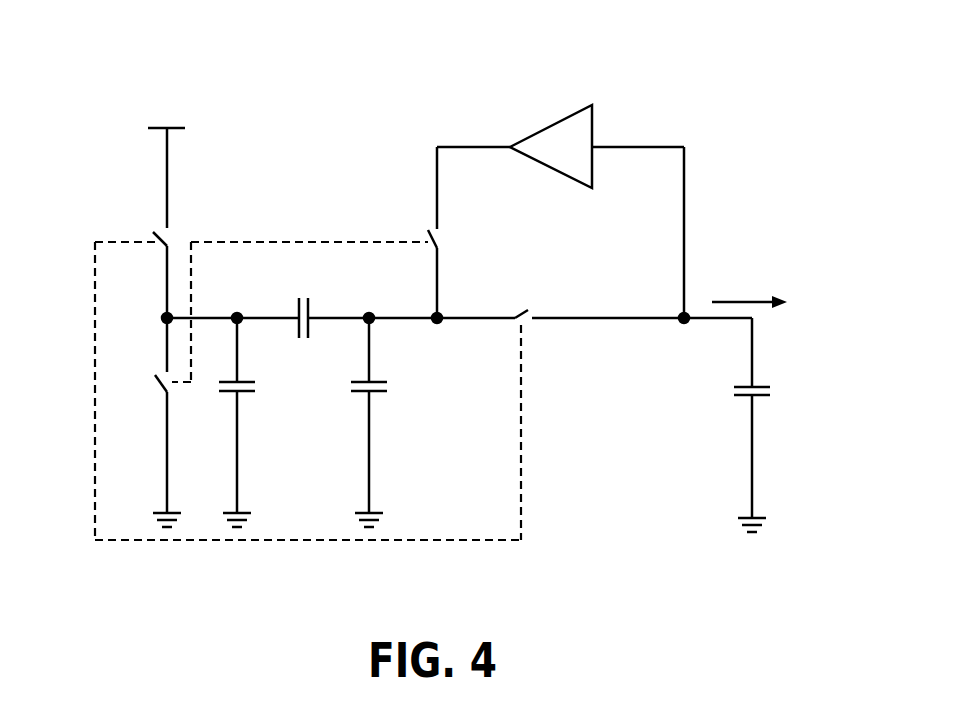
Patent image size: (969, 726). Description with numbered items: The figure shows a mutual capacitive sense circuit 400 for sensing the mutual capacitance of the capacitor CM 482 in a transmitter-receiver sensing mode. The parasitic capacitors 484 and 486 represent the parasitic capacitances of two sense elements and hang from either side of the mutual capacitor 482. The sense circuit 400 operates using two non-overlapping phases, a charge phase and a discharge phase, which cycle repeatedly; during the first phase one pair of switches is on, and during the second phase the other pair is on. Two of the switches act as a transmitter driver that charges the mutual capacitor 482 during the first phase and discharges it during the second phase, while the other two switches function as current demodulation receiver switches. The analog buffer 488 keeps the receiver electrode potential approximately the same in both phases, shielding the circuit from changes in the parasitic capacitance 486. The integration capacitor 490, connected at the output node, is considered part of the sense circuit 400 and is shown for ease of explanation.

The mutual capacitive sense circuit 400 is at (774, 75).
The capacitor CM 482 is at (327, 298).
The capacitor CP2 484 is at (253, 422).
The capacitor CP1 486 is at (353, 422).
The analog buffer 488 is at (570, 114).
The integration capacitor CINT 490 is at (780, 425).